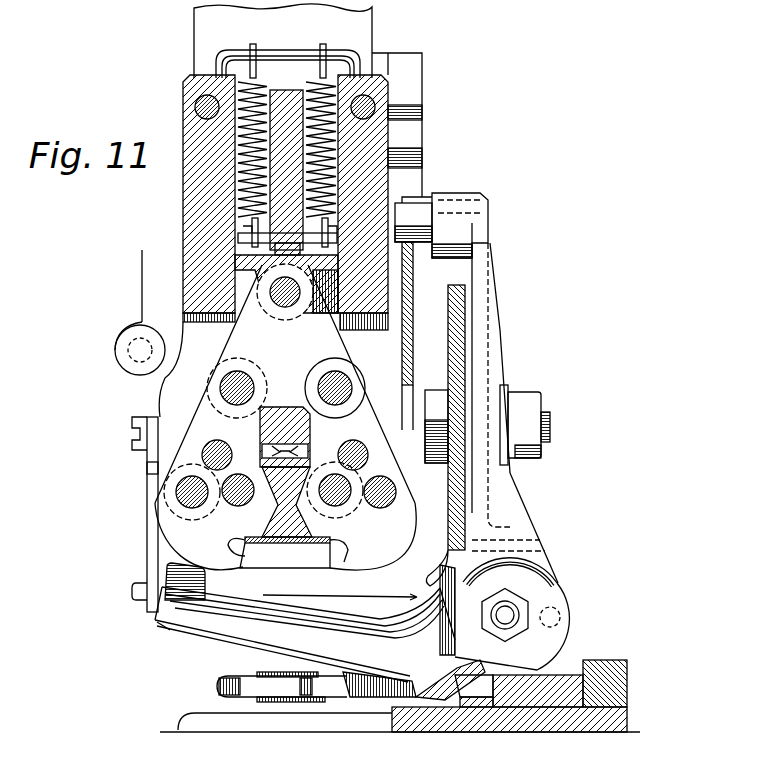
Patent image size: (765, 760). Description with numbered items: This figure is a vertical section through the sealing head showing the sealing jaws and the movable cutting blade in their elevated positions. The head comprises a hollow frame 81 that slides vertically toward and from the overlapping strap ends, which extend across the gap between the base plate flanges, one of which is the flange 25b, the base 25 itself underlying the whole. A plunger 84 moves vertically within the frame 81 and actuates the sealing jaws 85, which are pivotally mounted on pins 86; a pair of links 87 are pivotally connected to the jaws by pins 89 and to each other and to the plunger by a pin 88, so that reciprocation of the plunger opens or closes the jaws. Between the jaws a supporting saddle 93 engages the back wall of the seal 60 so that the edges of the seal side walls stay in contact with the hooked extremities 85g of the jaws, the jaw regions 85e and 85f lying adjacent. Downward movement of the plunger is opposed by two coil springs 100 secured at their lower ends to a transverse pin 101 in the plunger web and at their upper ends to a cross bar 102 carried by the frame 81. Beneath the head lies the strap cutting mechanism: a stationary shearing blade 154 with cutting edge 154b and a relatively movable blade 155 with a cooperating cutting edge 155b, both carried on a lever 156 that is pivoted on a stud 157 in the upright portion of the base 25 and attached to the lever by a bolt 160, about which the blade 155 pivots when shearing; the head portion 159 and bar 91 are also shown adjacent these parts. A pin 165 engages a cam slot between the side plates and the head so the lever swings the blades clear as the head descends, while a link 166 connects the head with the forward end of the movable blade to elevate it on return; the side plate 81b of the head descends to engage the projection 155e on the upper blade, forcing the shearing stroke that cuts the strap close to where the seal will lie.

The coil springs 100 is at (294, 45).
The cross bar 102 is at (356, 58).
The plunger 84 is at (262, 185).
The frame 81 is at (190, 170).
The transverse pin 101 is at (245, 241).
The pin 165 is at (420, 213).
The pin 88 is at (333, 267).
The side plate 81b is at (197, 262).
The links 87 is at (238, 343).
The pins 89 is at (222, 385).
The flange 25b is at (462, 378).
The bolt 159 is at (522, 402).
The stud 157 is at (549, 428).
The lever 156 is at (515, 505).
The bar 91 is at (205, 452).
The link 166 is at (150, 468).
The pins 86 is at (180, 492).
The sealing jaws 85 is at (175, 522).
The bolt 160 is at (510, 612).
The pad 155e is at (140, 589).
The movable blade 155 is at (155, 618).
The cutting edge 155b is at (162, 632).
The cutting edge 154b is at (222, 680).
The shearing blade 154 is at (217, 690).
The base 25 is at (372, 733).
The extremities 85g is at (232, 574).
The supporting saddle 93 is at (285, 542).
The seal 60 is at (285, 555).
The hook 85f is at (344, 566).
The edge 85e is at (400, 604).